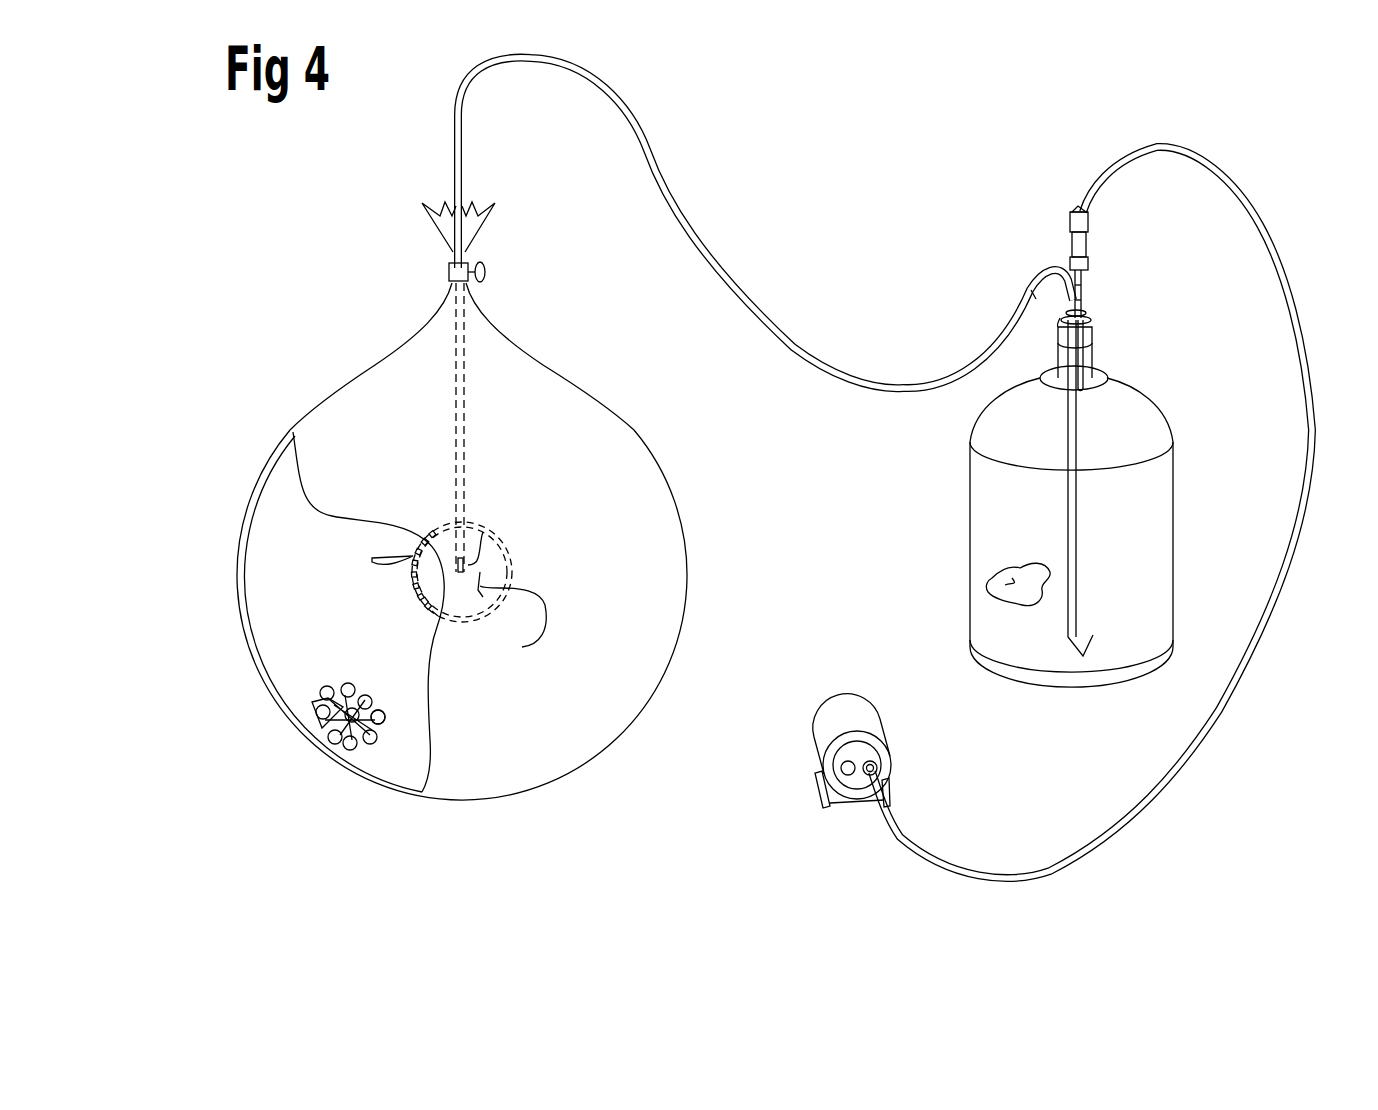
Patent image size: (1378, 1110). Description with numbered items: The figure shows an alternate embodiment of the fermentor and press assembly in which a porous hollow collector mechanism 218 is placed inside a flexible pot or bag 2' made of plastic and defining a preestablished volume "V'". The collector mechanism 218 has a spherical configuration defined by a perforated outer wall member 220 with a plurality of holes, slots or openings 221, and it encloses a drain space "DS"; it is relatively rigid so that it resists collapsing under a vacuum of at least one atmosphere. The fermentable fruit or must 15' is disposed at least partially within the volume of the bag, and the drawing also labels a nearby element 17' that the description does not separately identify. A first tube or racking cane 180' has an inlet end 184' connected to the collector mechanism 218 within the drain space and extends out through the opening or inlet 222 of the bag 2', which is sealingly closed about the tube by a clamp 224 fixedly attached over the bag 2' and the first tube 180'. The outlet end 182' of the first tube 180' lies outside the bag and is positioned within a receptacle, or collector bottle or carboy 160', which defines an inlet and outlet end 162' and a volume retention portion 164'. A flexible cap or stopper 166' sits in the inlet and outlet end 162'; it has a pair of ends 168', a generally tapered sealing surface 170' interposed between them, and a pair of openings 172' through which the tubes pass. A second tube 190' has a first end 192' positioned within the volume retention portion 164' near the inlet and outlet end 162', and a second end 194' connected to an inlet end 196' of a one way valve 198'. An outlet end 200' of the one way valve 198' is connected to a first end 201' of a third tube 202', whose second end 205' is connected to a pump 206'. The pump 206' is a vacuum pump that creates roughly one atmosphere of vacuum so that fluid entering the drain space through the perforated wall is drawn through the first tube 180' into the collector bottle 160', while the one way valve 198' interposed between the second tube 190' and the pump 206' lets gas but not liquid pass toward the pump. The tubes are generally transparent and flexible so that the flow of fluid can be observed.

The flexible pot or bag 2' is at (507, 541).
The first tube or racking cane 180' is at (704, 223).
The opening or inlet 222 is at (449, 275).
The clamp 224 is at (487, 272).
The inlet end of the first tube 184' is at (489, 452).
The perforated outer wall member 220 is at (410, 586).
The holes, slots or openings 221 is at (369, 561).
The porous hollow collector mechanism 218 is at (432, 611).
The fermentable fruit or must 15' is at (336, 698).
The stone fragment 17' is at (393, 694).
The receptacle, or collector bottle or carboy 160' is at (1120, 532).
The inlet and outlet end 162' is at (1113, 367).
The volume retention portion 164' is at (1018, 561).
The flexible cap or stopper 166' is at (1123, 321).
The pair of ends 168' is at (1032, 342).
The sealing surface 170' is at (1122, 346).
The pair of openings 172' is at (1126, 299).
The outlet end of the first tube 182' is at (1118, 488).
The second tube 190' is at (1130, 277).
The first end of the second tube 192' is at (1119, 378).
The second end of the second tube 194' is at (1130, 248).
The inlet end of the one way valve 196' is at (1130, 283).
The one way valve 198' is at (1128, 228).
The outlet end of the one way valve 200' is at (1128, 188).
The first end of the third tube 201' is at (1044, 201).
The third tube 202' is at (1105, 512).
The second end of the third tube 205' is at (915, 778).
The pump 206' is at (890, 749).